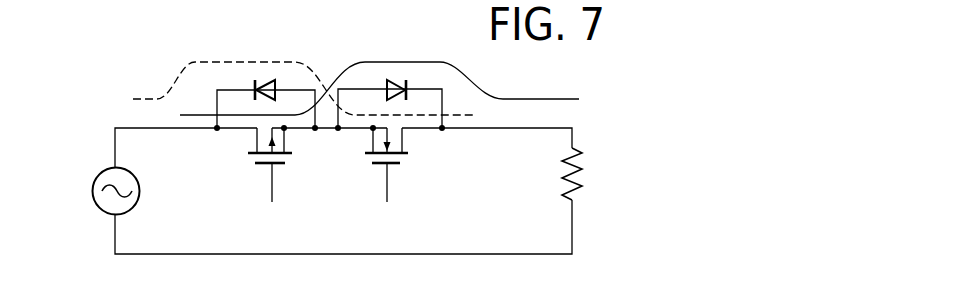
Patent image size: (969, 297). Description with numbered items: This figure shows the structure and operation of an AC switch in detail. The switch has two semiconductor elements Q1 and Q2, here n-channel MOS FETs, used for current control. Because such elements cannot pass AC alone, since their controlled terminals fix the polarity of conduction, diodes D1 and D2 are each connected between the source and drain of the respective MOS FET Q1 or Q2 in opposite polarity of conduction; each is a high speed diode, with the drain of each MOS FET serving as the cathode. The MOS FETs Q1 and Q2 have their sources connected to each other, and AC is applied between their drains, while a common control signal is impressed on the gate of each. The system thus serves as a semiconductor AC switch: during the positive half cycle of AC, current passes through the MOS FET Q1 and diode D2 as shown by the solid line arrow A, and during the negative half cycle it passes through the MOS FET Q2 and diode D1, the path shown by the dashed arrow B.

The diode D1 is at (303, 83).
The diode D2 is at (379, 83).
The semiconductor element Q1 is at (269, 169).
The semiconductor element Q2 is at (396, 169).
The element AC is at (98, 191).
The solid line arrow A is at (594, 101).
The current path B (through D1) B is at (115, 101).